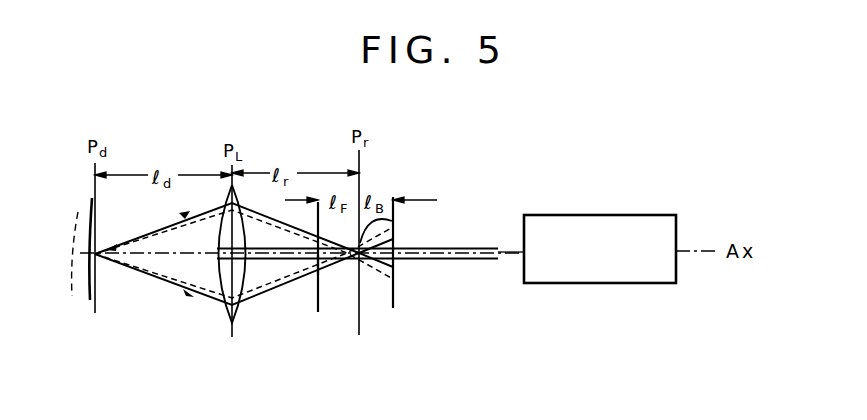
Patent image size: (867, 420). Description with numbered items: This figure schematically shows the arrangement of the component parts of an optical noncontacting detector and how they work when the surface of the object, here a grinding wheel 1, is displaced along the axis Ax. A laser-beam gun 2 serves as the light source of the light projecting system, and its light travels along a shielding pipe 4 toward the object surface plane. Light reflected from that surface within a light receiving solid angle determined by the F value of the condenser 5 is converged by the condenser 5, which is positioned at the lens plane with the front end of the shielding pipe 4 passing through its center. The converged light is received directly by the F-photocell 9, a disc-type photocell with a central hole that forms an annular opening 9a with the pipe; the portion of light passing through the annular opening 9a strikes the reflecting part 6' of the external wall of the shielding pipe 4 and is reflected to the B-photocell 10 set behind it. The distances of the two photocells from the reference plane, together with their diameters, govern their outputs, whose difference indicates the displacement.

The grinding wheel 1 is at (93, 295).
The laser-beam gun 2 is at (565, 215).
The shielding pipe 4 is at (463, 248).
The condenser 5 is at (223, 222).
The reflecting part 6' is at (391, 227).
The F-photocell 9 is at (318, 202).
The annular opening 9a is at (318, 263).
The B-photocell 10 is at (393, 280).